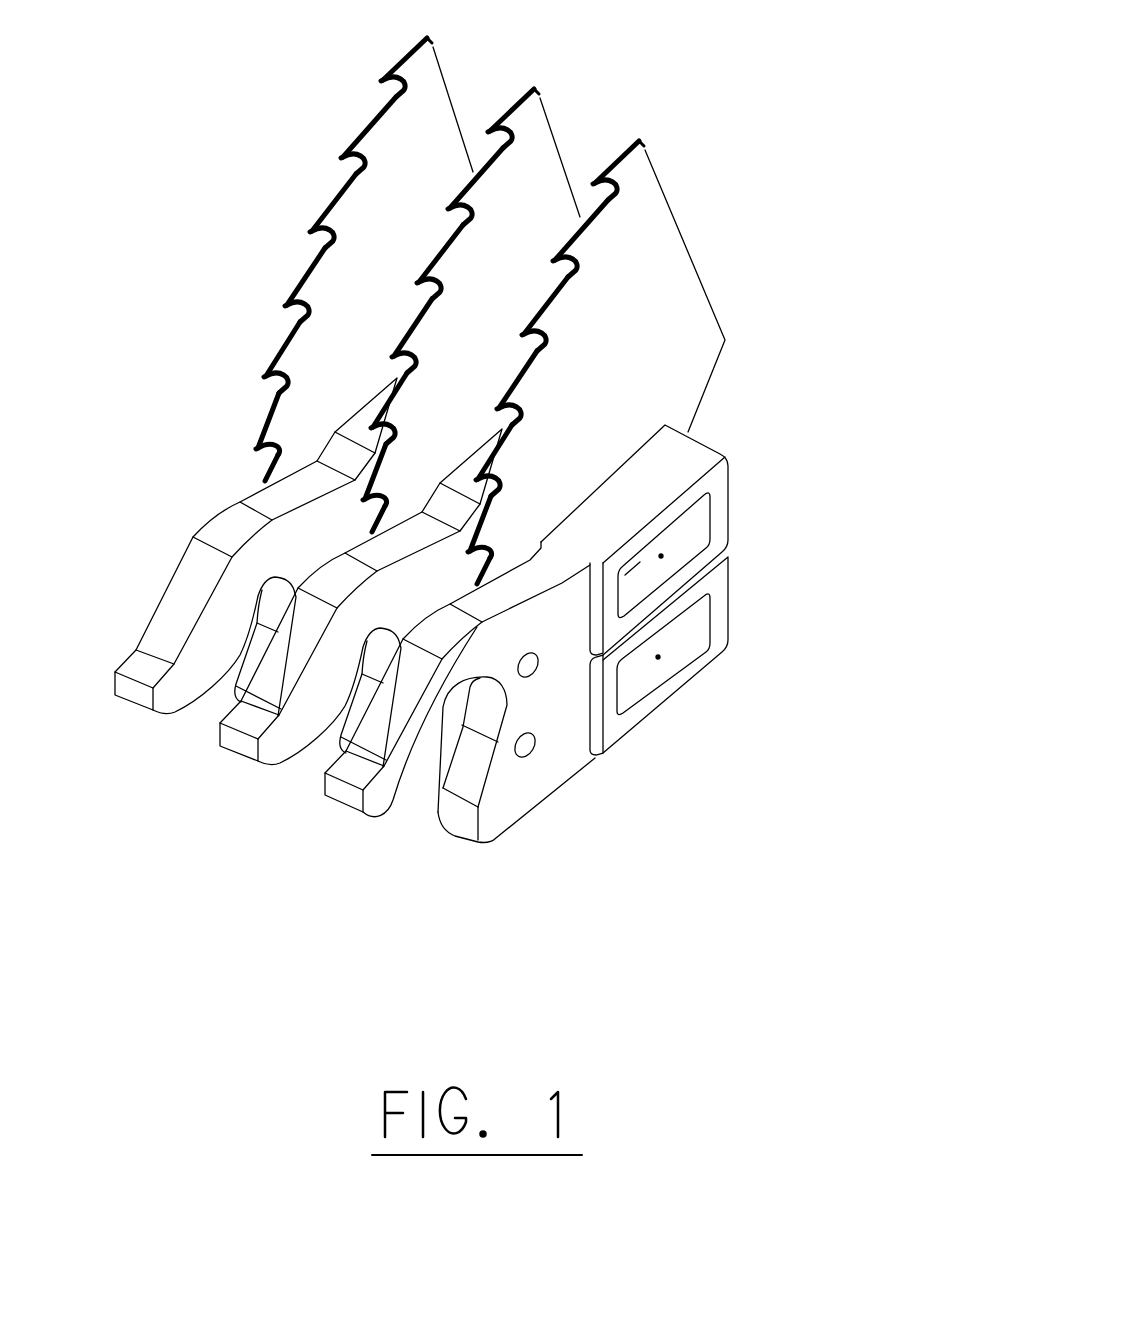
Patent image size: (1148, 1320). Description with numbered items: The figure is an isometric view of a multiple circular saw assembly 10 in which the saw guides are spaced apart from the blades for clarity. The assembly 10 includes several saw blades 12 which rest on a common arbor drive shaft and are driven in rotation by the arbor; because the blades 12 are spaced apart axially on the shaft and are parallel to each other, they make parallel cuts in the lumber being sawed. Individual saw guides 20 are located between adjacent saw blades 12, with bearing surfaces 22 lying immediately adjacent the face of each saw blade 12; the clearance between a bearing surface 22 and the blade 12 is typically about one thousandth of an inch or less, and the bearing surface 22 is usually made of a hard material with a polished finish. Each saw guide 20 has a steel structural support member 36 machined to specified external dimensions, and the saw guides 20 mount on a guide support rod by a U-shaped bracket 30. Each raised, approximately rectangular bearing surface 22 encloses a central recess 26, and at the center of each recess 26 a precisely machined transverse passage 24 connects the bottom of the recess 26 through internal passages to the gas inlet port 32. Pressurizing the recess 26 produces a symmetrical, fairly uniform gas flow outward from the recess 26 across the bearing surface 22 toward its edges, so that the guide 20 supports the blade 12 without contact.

The multiple circular saw assembly 10 is at (747, 202).
The saw blade 12 is at (625, 175).
The saw guide 20 is at (760, 484).
The bearing surface 22 is at (725, 507).
The transverse passage 24 is at (660, 557).
The central recess 26 is at (628, 585).
The U-shaped bracket 30 is at (378, 798).
The gas inlet port 32 is at (532, 670).
The structural support member 36 is at (565, 642).